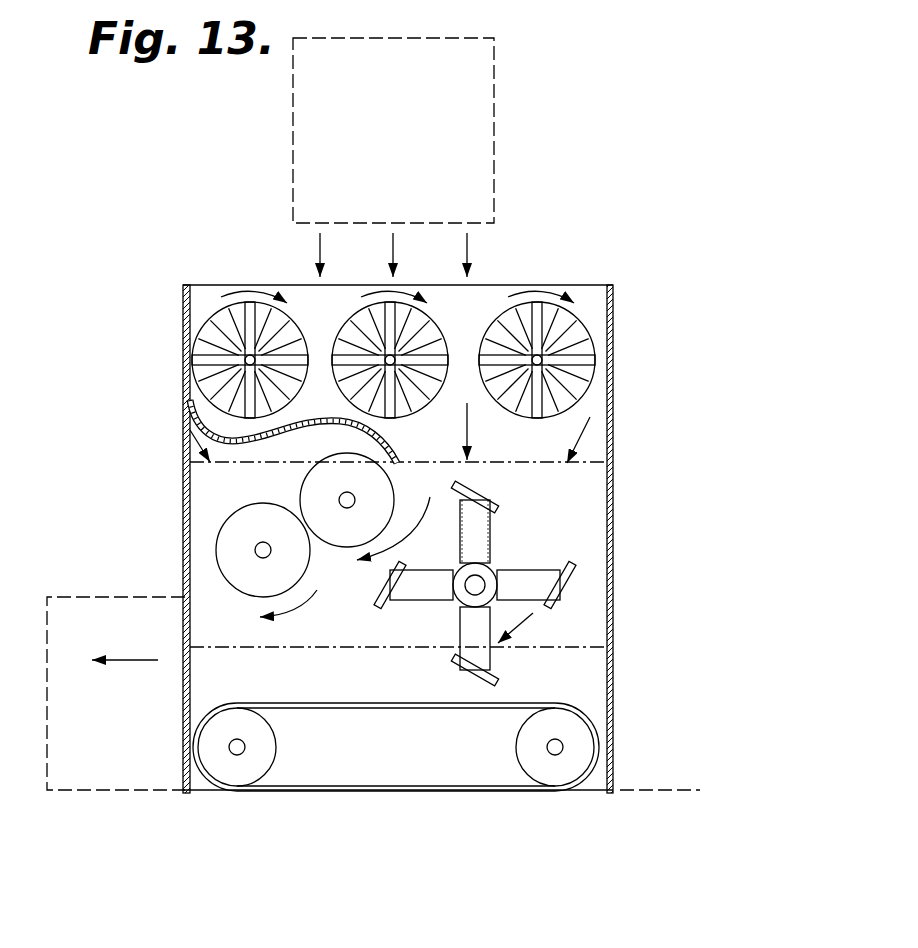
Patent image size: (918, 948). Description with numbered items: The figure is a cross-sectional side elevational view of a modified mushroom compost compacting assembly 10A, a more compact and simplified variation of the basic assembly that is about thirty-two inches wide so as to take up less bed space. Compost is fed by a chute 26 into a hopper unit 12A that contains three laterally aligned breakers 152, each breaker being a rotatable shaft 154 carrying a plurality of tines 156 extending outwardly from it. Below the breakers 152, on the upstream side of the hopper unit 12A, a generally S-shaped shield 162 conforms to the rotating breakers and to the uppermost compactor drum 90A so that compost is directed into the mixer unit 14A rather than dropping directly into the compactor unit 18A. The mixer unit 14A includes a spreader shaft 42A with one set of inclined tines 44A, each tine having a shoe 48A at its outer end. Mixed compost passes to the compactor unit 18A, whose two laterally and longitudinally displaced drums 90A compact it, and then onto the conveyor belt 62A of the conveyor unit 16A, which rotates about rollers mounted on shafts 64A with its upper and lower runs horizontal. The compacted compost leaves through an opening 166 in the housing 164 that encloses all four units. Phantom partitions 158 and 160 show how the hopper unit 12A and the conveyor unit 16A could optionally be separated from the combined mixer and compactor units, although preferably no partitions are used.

The mushroom compost compacting assembly 10A is at (670, 238).
The hopper unit 12A is at (508, 285).
The mixer unit 14A is at (593, 493).
The conveyor unit 16A is at (592, 685).
The compactor unit 18A is at (213, 503).
The chute 26 is at (457, 115).
The spreader shaft 42A is at (583, 570).
The tines 44A is at (543, 583).
The shoe 48A is at (475, 583).
The conveyor belt 62A is at (480, 793).
The shafts 64A is at (240, 753).
The compacting drums 90A is at (287, 483).
The breaker 152 is at (399, 329).
The rotatable shaft 154 is at (206, 360).
The tines 156 is at (203, 344).
The partition 158 is at (183, 435).
The partition 160 is at (230, 648).
The shield 162 is at (190, 403).
The housing 164 is at (613, 423).
The opening 166 is at (185, 742).